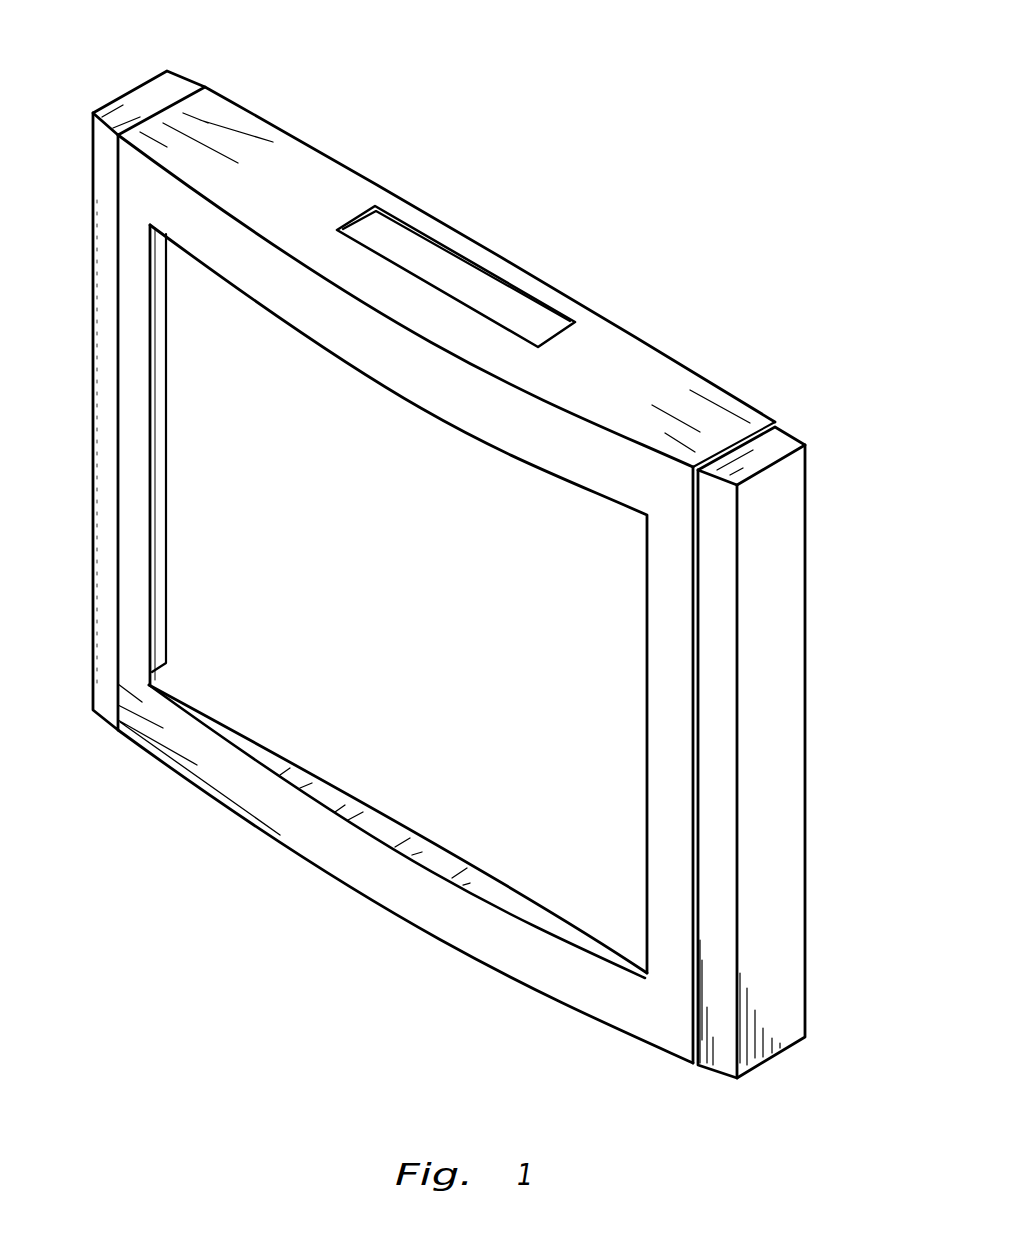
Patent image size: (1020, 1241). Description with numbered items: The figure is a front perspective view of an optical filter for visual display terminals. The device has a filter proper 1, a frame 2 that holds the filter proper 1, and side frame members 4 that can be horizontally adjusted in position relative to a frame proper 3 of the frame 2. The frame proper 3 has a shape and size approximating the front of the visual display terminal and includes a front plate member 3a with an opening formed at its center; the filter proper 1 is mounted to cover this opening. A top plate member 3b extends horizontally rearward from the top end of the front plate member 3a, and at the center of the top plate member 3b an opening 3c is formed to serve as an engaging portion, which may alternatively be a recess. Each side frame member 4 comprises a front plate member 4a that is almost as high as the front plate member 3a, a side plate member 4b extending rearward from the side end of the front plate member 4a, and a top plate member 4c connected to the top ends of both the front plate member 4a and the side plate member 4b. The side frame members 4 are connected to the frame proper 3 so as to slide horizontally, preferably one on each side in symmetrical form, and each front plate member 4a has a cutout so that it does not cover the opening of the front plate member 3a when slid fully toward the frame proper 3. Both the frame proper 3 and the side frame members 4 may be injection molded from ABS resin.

The filter proper 1 is at (583, 728).
The frame 2 is at (706, 345).
The frame proper 3 is at (315, 873).
The front plate member 3a is at (283, 290).
The top plate member 3b is at (607, 368).
The opening 3c is at (453, 285).
The side frame member 4 is at (93, 363).
The front plate member 4a is at (110, 207).
The side plate member 4b is at (765, 845).
The top plate member 4c is at (147, 110).